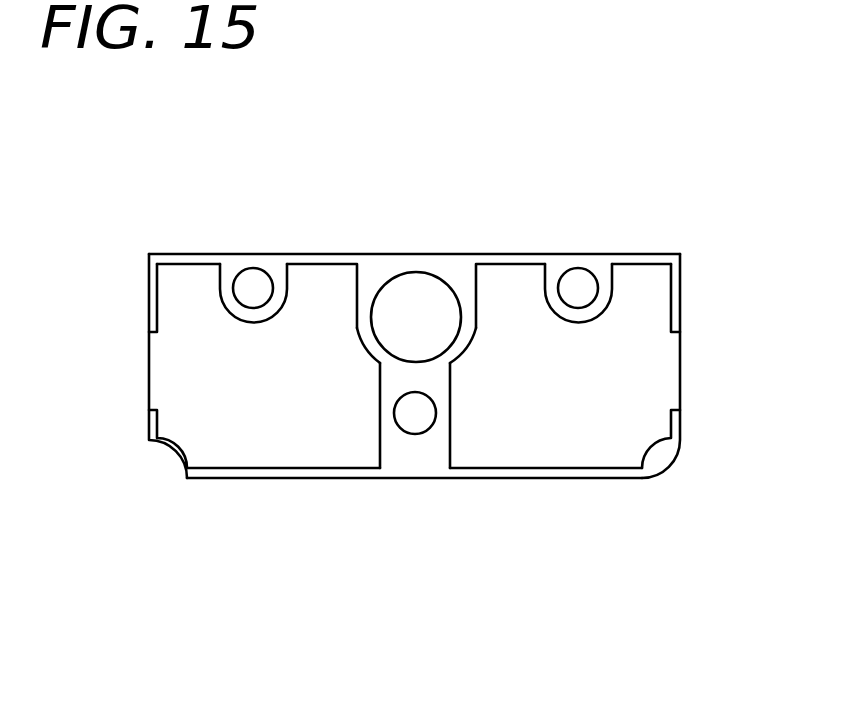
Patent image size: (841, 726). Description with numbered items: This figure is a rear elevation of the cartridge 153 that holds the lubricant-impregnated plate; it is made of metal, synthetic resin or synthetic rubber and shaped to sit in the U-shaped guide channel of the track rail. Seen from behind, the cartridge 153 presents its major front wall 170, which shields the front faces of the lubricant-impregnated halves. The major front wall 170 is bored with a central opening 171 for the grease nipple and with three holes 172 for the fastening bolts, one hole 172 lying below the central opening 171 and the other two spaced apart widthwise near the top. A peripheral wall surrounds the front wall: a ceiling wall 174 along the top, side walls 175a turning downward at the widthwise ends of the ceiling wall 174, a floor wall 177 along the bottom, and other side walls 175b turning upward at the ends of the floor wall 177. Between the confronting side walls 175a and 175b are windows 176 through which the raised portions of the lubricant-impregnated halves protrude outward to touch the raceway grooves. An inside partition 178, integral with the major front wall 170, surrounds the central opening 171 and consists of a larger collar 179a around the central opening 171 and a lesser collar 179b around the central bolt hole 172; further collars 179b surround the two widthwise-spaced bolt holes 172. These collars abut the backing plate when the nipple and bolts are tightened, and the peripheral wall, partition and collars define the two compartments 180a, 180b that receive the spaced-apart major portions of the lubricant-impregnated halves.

The cartridge 153 is at (657, 245).
The major front wall 170 is at (501, 298).
The central opening 171 is at (416, 290).
The holes for fastening bolts 172 is at (250, 282).
The ceiling wall 174 is at (317, 254).
The side walls 175a is at (150, 302).
The other side walls 175b is at (147, 435).
The windows 176 is at (152, 366).
The bottom edge wall 177 is at (267, 475).
The inside partition 178 is at (398, 447).
The larger collar 179a is at (358, 333).
The lesser collar 179b is at (235, 315).
The right recess 180a is at (592, 437).
The left recess 180b is at (292, 434).